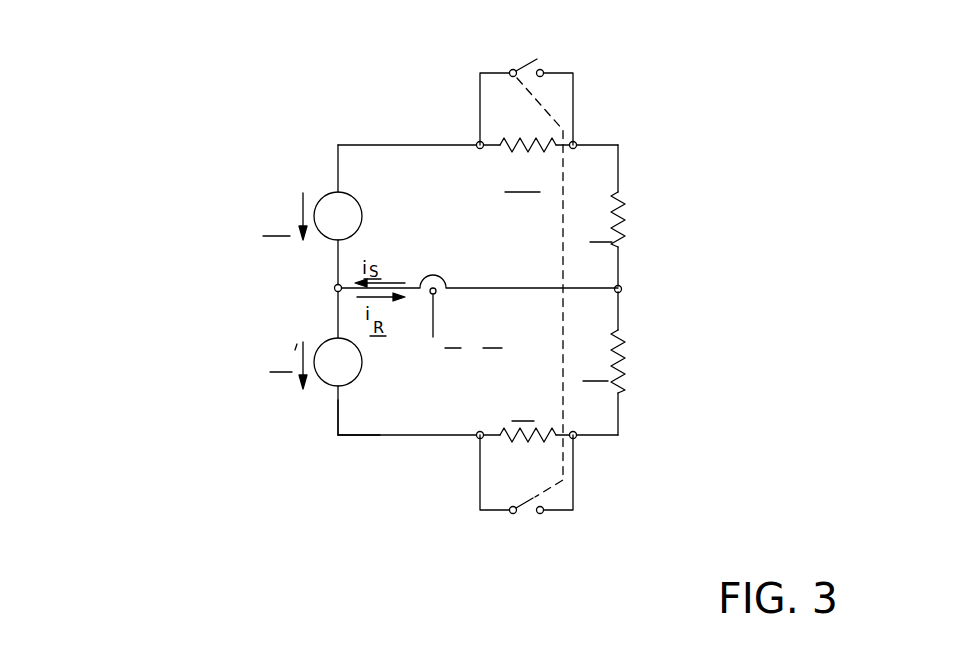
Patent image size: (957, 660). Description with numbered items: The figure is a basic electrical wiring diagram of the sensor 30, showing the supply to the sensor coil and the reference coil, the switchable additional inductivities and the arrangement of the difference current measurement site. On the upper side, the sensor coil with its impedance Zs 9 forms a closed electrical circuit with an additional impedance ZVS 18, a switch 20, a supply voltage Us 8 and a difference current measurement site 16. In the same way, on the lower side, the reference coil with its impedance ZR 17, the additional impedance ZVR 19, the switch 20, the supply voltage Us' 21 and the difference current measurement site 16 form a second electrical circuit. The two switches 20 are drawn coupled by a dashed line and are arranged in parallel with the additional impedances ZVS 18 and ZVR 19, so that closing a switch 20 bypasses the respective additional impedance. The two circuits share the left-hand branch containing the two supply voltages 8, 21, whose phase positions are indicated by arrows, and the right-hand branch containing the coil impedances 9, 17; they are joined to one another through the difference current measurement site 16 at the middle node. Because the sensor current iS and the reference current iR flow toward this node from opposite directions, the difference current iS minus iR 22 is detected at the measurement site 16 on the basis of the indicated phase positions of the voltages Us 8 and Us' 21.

The supply voltage 8 is at (272, 243).
The supply voltage 21 is at (282, 375).
The additional impedance 18 is at (495, 152).
The additional impedance 19 is at (497, 430).
The impedance 9 is at (630, 202).
The impedance 17 is at (627, 353).
The switch 20 is at (537, 62).
The difference current measurement site 16 is at (437, 274).
The difference current 22 is at (495, 323).
The sensor 30 is at (338, 439).